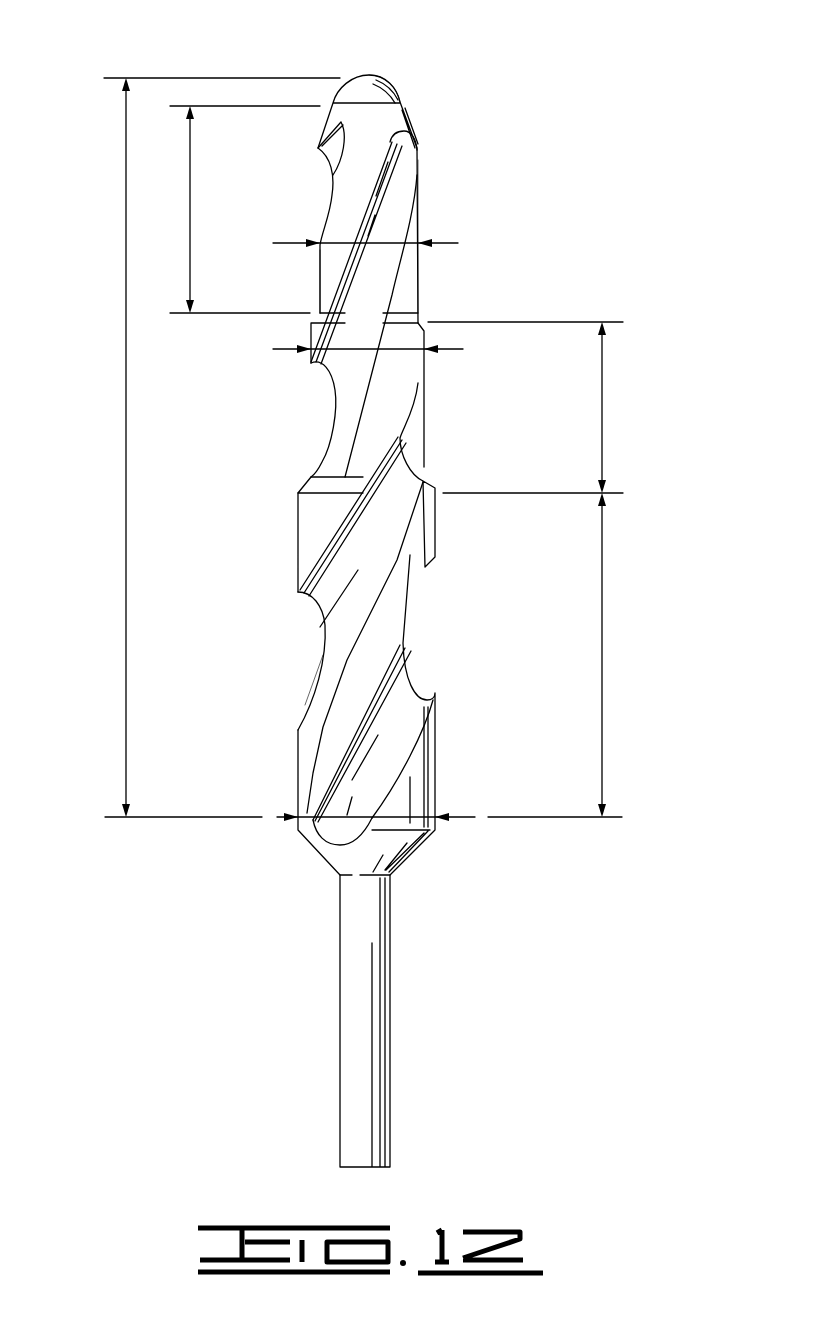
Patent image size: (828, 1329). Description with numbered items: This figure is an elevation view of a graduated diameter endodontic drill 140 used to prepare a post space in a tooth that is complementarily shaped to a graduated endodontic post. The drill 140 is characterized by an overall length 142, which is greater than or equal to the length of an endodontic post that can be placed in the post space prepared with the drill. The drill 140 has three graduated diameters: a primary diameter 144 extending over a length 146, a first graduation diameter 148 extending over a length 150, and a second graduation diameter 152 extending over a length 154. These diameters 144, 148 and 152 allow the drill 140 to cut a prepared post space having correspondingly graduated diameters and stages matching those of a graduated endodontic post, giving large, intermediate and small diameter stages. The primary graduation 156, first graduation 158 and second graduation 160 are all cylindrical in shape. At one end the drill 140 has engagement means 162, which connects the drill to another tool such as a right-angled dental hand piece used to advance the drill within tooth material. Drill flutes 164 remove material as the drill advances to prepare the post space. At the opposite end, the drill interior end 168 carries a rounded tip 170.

The graduated diameter endodontic drill 140 is at (312, 62).
The overall length 142 is at (126, 381).
The primary diameter 144 is at (462, 813).
The length 146 is at (602, 653).
The first graduation diameter 148 is at (453, 352).
The length 150 is at (602, 413).
The second graduation diameter 152 is at (447, 240).
The length 154 is at (190, 220).
The primary graduation 156 is at (298, 664).
The first graduation 158 is at (308, 402).
The second graduation 160 is at (432, 284).
The engagement means 162 is at (390, 1038).
The drill flutes 164 is at (317, 604).
The drill interior end 168 is at (400, 98).
The rounded tip 170 is at (377, 77).